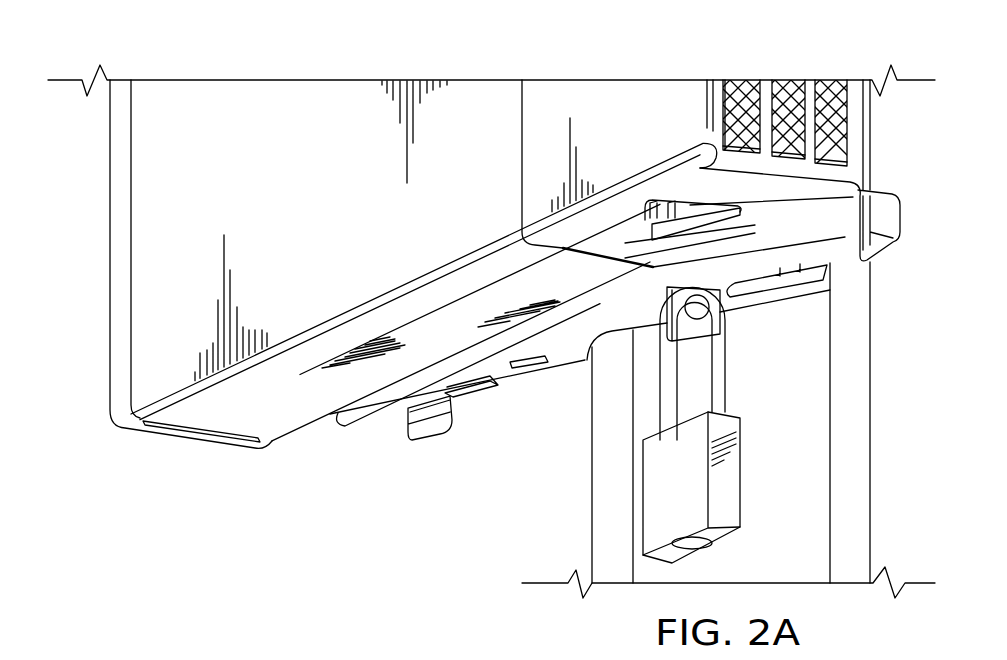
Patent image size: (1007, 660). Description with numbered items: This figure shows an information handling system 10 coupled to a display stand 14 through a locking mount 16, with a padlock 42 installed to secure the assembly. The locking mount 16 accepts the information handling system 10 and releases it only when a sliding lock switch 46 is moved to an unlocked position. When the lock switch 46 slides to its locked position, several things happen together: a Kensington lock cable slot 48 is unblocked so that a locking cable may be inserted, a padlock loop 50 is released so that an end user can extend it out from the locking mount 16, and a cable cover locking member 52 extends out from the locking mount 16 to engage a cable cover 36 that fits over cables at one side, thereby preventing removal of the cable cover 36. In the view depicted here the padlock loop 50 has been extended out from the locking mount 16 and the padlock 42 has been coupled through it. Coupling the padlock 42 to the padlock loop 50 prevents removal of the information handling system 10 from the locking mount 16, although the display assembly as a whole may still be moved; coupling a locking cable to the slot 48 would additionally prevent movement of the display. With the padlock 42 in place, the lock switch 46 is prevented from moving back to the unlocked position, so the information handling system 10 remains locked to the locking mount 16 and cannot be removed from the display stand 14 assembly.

The information handling system 10 is at (480, 300).
The display stand 14 is at (862, 422).
The locking mount 16 is at (461, 379).
The cable cover 36 is at (614, 104).
The padlock 42 is at (733, 492).
The sliding lock switch 46 is at (425, 437).
The Kensington lock cable slot 48 is at (523, 366).
The padlock loop 50 is at (515, 281).
The cable cover locking member 52 is at (680, 210).